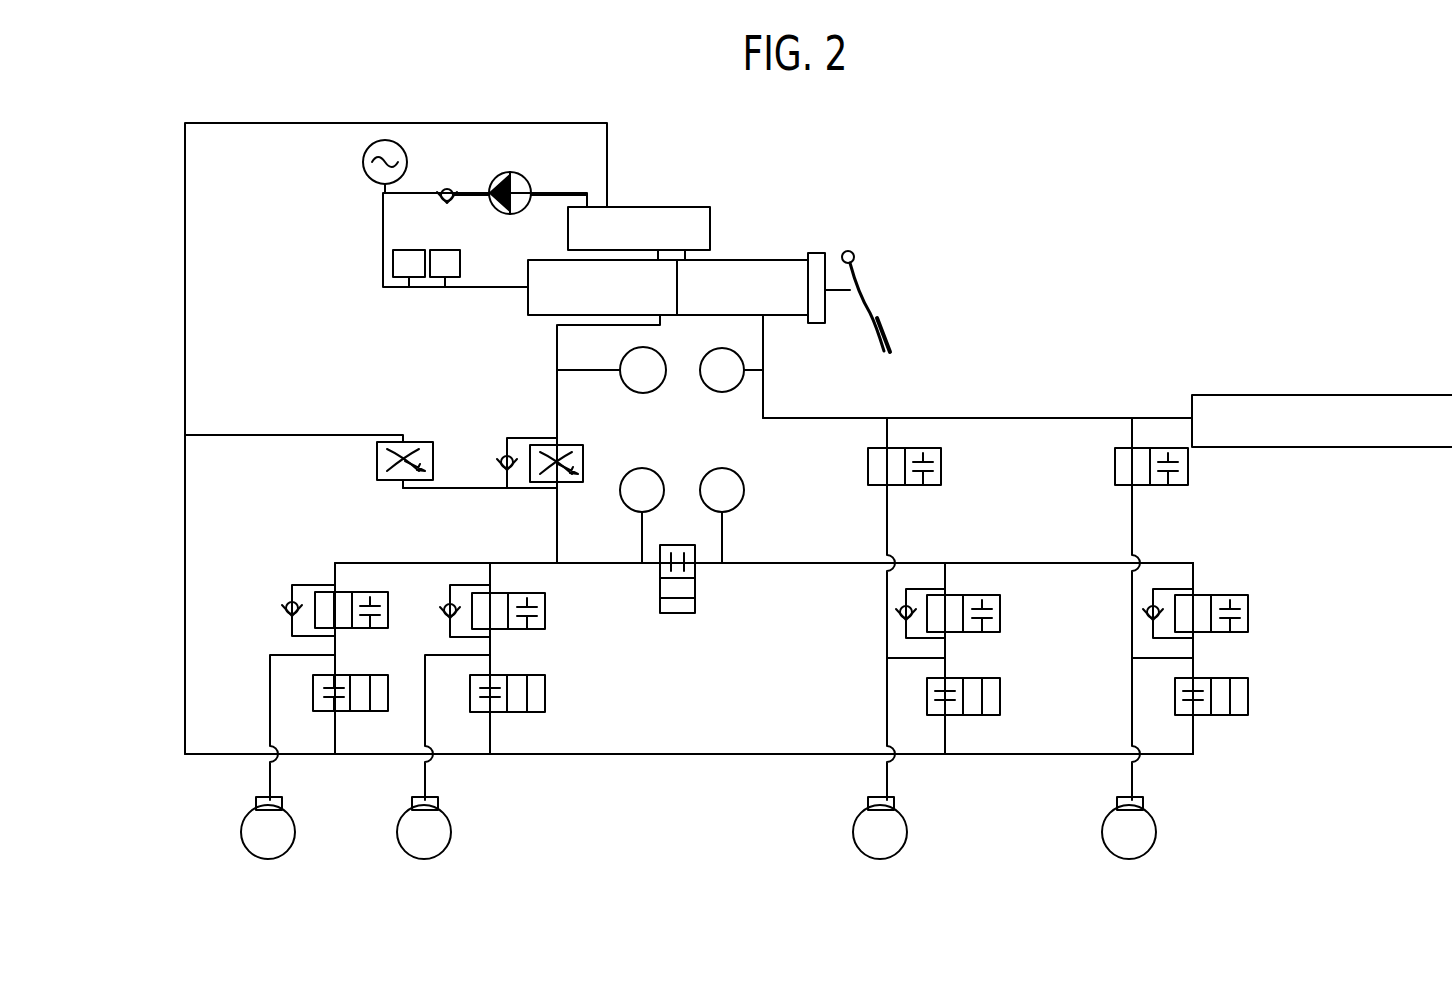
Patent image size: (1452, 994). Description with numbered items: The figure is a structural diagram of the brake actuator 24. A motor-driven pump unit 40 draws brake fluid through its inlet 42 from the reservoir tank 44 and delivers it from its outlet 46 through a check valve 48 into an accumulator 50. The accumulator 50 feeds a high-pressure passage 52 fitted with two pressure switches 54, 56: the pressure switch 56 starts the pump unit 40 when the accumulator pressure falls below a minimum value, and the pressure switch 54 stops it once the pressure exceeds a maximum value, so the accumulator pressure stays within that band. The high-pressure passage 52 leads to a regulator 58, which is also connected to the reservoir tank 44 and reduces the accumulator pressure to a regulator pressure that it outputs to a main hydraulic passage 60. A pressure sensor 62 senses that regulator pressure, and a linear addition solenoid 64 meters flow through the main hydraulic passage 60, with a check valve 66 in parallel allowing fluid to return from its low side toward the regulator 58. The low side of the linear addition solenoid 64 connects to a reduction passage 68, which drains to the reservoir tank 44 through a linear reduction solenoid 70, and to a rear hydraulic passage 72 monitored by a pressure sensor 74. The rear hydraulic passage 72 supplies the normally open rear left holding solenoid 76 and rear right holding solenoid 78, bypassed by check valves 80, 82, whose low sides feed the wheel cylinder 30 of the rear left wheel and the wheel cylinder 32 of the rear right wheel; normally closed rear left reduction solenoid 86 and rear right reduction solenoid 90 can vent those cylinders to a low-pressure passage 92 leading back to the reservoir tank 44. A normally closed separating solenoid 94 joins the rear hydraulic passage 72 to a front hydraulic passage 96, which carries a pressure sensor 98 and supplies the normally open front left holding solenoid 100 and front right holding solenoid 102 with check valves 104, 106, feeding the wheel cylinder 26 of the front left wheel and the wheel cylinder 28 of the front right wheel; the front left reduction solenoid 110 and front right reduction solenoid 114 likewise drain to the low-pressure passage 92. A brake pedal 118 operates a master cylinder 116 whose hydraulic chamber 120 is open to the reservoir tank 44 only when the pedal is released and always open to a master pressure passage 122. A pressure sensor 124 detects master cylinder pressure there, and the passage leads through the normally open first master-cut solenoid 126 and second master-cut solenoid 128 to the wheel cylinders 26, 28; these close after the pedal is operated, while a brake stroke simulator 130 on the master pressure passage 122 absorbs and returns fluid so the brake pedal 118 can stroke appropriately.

The brake actuator 24 is at (796, 200).
The wheel cylinder 26 is at (894, 798).
The wheel cylinder 28 is at (1142, 798).
The wheel cylinder 30 is at (282, 798).
The wheel cylinder 32 is at (438, 799).
The pump unit 40 is at (522, 179).
The inlet 42 is at (538, 202).
The reservoir tank 44 is at (654, 207).
The outlet 46 is at (488, 197).
The check valve 48 is at (450, 188).
The accumulator 50 is at (365, 173).
The high-pressure passage 52 is at (383, 246).
The pressure switch 54 is at (405, 250).
The pressure switch 56 is at (460, 264).
The regulator 58 is at (528, 304).
The main hydraulic passage 60 is at (560, 353).
The pressure sensor 62 is at (646, 348).
The linear addition solenoid 64 is at (570, 443).
The check valve 66 is at (502, 452).
The reduction passage 68 is at (474, 488).
The linear reduction solenoid 70 is at (377, 466).
The rear hydraulic passage 72 is at (610, 564).
The pressure sensor 74 is at (648, 471).
The rear left holding solenoid 76 is at (344, 572).
The rear right holding solenoid 78 is at (530, 630).
The check valve 80 is at (288, 604).
The check valve 82 is at (448, 616).
The rear left reduction solenoid 86 is at (345, 674).
The rear right reduction solenoid 90 is at (545, 690).
The low-pressure passage 92 is at (680, 756).
The separating solenoid 94 is at (695, 605).
The front hydraulic passage 96 is at (814, 566).
The pressure sensor 98 is at (745, 490).
The front left holding solenoid 100 is at (992, 594).
The front right holding solenoid 102 is at (1220, 595).
The check valve 104 is at (896, 620).
The check valve 106 is at (1146, 618).
The front left reduction solenoid 110 is at (967, 656).
The front right reduction solenoid 114 is at (1220, 678).
The master cylinder 116 is at (738, 258).
The brake pedal 118 is at (862, 274).
The hydraulic chamber 120 is at (774, 323).
The master pressure passage 122 is at (850, 416).
The pressure sensor 124 is at (723, 394).
The first master-cut solenoid 126 is at (908, 486).
The second master-cut solenoid 128 is at (1163, 486).
The brake stroke simulator 130 is at (1331, 394).